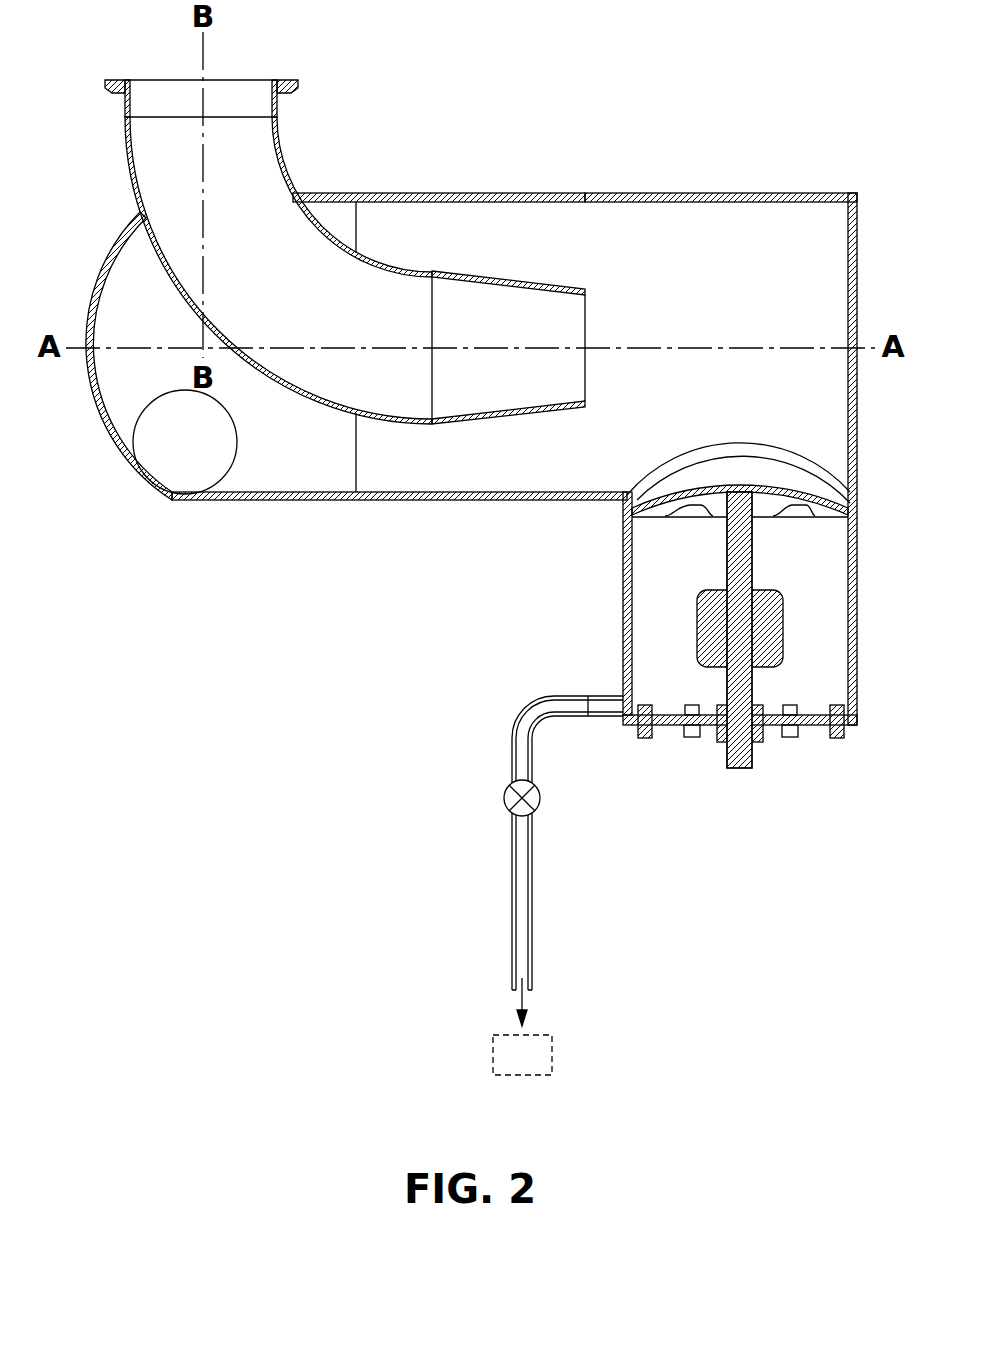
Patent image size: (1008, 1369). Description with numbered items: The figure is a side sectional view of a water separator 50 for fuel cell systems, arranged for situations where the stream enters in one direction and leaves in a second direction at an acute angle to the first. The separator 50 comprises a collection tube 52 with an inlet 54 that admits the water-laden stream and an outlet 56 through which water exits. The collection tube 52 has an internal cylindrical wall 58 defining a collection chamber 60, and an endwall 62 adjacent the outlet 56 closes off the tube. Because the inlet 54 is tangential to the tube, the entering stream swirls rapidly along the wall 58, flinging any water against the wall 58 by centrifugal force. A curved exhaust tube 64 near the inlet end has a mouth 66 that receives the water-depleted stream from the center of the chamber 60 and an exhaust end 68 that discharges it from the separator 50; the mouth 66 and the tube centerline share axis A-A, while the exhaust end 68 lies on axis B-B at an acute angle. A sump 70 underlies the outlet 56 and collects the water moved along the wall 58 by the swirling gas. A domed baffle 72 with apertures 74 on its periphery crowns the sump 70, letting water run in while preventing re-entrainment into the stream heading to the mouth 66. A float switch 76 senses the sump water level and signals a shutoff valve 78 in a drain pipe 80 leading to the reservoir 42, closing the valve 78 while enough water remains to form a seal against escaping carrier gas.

The reservoir 42 is at (522, 1026).
The water separator 50 is at (495, 402).
The collection tube 52 is at (470, 193).
The inlet 54 is at (222, 450).
The outlet 56 is at (657, 483).
The internal cylindrical wall 58 is at (616, 198).
The collection chamber 60 is at (720, 213).
The endwall 62 is at (857, 318).
The curved exhaust tube 64 is at (298, 190).
The mouth 66 is at (590, 291).
The exhaust end 68 is at (249, 80).
The sump 70 is at (623, 598).
The domed baffle 72 is at (710, 486).
The apertures 74 is at (684, 516).
The float switch 76 is at (768, 606).
The shutoff valve 78 is at (540, 797).
The drain pipe 80 is at (527, 720).